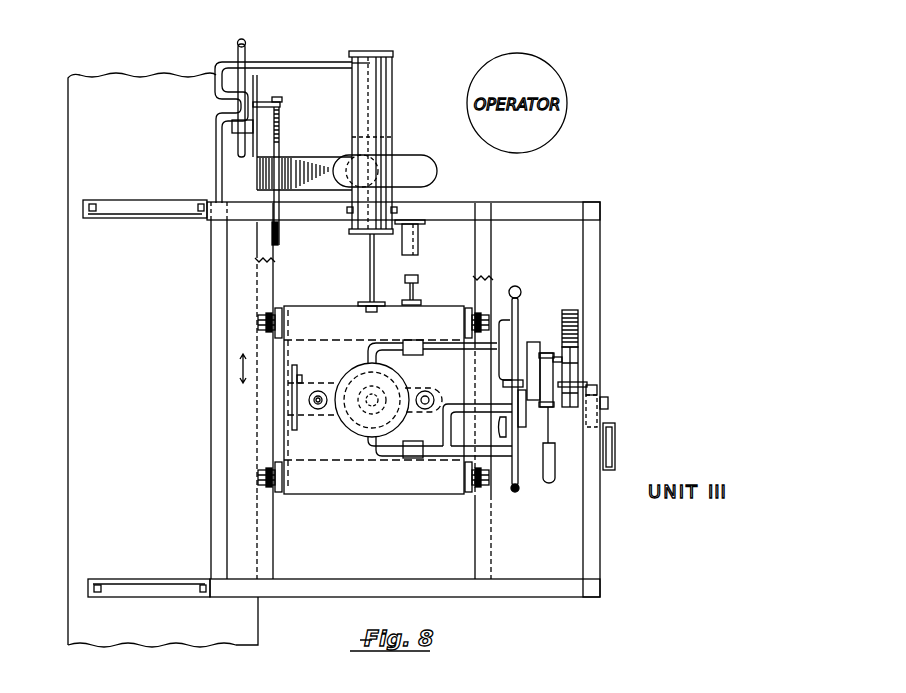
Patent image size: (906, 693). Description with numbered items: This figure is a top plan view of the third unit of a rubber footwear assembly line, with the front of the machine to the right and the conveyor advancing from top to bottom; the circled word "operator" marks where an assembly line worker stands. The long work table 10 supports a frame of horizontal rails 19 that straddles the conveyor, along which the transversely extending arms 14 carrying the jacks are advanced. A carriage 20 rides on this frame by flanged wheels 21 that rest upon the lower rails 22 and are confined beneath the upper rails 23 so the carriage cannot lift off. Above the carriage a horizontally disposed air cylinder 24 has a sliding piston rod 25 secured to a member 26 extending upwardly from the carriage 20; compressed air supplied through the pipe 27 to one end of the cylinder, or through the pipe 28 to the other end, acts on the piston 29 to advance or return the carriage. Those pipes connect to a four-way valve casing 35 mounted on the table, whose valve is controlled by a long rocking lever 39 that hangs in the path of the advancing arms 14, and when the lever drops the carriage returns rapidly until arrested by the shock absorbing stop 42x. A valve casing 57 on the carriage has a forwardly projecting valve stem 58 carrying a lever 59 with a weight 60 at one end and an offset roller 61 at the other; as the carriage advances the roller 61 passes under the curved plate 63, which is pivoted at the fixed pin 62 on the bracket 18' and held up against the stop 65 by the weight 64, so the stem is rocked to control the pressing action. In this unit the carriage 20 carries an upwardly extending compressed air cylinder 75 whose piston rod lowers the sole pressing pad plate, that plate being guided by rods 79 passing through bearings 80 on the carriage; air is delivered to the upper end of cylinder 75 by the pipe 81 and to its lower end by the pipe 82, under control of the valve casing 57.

The table 10 is at (180, 636).
The arm 14 is at (322, 165).
The bracket 18' is at (629, 415).
The horizontal rail 19 is at (210, 346).
The carriage 20 is at (337, 496).
The flanged wheel 21 is at (270, 315).
The lower rail 22 is at (273, 539).
The upper rail 23 is at (268, 562).
The air cylinder 24 is at (384, 114).
The piston rod 25 is at (370, 250).
The member 26 is at (381, 305).
The pipe 27 is at (327, 52).
The pipe 28 is at (304, 233).
The piston 29 is at (395, 136).
The four-way valve casing 35 is at (255, 87).
The rocking lever 39 is at (278, 165).
The shock absorbing stop 42x is at (425, 243).
The valve casing 57 is at (518, 333).
The valve stem 58 is at (532, 402).
The lever 59 is at (553, 404).
The weight 60 is at (548, 490).
The offset roller 61 is at (581, 351).
The fixed pin 62 is at (606, 401).
The plate 63 is at (580, 317).
The weight 64 is at (615, 447).
The stop 65 is at (590, 385).
The compressed air cylinder 75 is at (402, 380).
The rod 79 is at (318, 409).
The bearing 80 is at (326, 409).
The pipe 81 is at (388, 343).
The pipe 82 is at (381, 462).